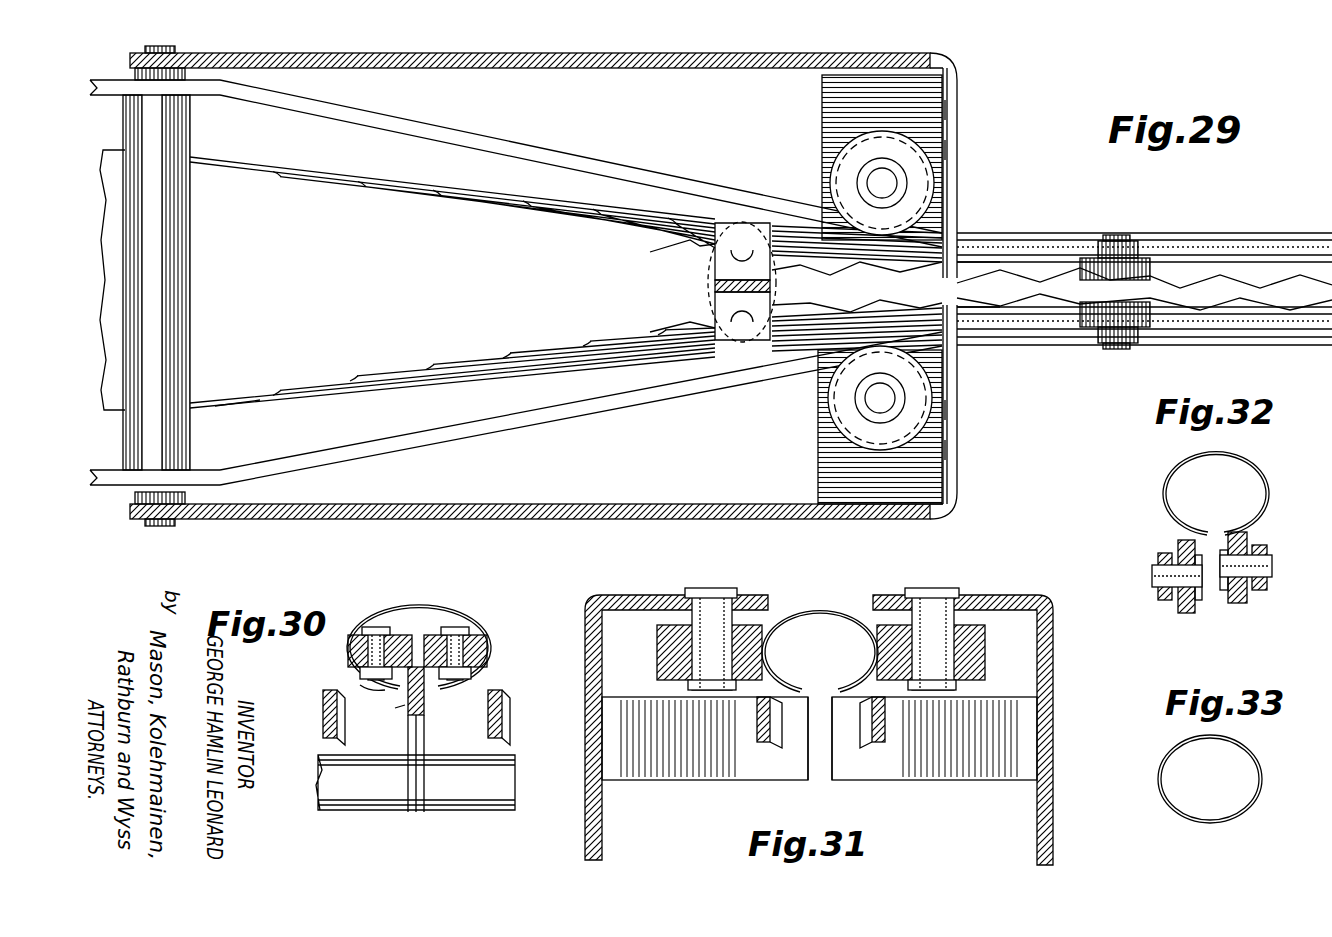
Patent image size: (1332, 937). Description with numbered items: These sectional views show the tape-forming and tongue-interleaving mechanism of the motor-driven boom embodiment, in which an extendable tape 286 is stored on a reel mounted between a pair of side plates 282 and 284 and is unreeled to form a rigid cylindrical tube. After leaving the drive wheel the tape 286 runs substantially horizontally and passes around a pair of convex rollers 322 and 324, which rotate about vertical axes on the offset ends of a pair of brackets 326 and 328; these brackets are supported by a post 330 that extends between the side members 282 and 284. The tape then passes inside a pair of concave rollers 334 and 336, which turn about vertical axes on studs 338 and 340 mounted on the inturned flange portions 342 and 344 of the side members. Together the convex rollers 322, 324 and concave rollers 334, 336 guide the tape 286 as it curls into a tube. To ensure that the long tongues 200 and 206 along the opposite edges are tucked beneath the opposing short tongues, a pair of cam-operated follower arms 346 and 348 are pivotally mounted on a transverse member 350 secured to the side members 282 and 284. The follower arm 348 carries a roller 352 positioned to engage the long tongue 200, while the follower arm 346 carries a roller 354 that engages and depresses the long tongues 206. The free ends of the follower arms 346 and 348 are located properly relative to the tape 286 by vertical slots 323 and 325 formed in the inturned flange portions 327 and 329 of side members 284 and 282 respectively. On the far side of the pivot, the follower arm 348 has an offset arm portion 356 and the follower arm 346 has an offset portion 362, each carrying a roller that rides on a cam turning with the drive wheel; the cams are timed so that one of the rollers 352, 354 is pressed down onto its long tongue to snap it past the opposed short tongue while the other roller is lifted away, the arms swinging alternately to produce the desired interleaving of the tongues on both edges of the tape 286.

In FIG. 29, the long tongue 200 is at (320, 185).
In FIG. 32, the long tongue 200 is at (1208, 528).
In FIG. 33, the long tongue 200 is at (1196, 818).
In FIG. 29, the long tongue 206 is at (238, 404).
In FIG. 30, the long tongue 206 is at (378, 688).
In FIG. 31, the long tongue 206 is at (800, 694).
In FIG. 29, the side plate 282 is at (400, 55).
In FIG. 31, the side plate 282 is at (1054, 806).
In FIG. 29, the side plate 284 is at (556, 519).
In FIG. 31, the side plate 284 is at (584, 838).
In FIG. 29, the extendable tape 286 is at (336, 408).
In FIG. 30, the extendable tape 286 is at (455, 605).
In FIG. 31, the extendable tape 286 is at (840, 605).
In FIG. 32, the extendable tape 286 is at (1262, 486).
In FIG. 33, the extendable tape 286 is at (1248, 764).
In FIG. 29, the convex roller 322 is at (714, 312).
In FIG. 30, the convex roller 322 is at (350, 640).
In FIG. 29, the vertical slot 323 is at (968, 338).
In FIG. 31, the vertical slot 323 is at (795, 750).
In FIG. 29, the convex roller 324 is at (700, 250).
In FIG. 30, the convex roller 324 is at (490, 640).
In FIG. 29, the vertical slot 325 is at (977, 232).
In FIG. 31, the vertical slot 325 is at (858, 750).
In FIG. 29, the bracket 326 is at (712, 265).
In FIG. 30, the bracket 326 is at (407, 728).
In FIG. 29, the inturned flange portion 327 is at (958, 465).
In FIG. 31, the inturned flange portion 327 is at (705, 775).
In FIG. 29, the bracket 328 is at (714, 286).
In FIG. 30, the bracket 328 is at (425, 718).
In FIG. 29, the inturned flange portion 329 is at (958, 147).
In FIG. 31, the inturned flange portion 329 is at (925, 775).
In FIG. 30, the post 330 is at (440, 800).
In FIG. 29, the concave roller 334 is at (845, 420).
In FIG. 31, the concave roller 334 is at (660, 652).
In FIG. 29, the concave roller 336 is at (842, 140).
In FIG. 31, the concave roller 336 is at (980, 655).
In FIG. 29, the stud 338 is at (876, 410).
In FIG. 31, the stud 338 is at (712, 600).
In FIG. 29, the stud 340 is at (872, 180).
In FIG. 31, the stud 340 is at (935, 600).
In FIG. 29, the inturned flange portion 342 is at (822, 485).
In FIG. 31, the inturned flange portion 342 is at (668, 595).
In FIG. 29, the inturned flange portion 344 is at (826, 96).
In FIG. 31, the inturned flange portion 344 is at (995, 595).
In FIG. 29, the follower arm 346 is at (480, 428).
In FIG. 30, the follower arm 346 is at (322, 702).
In FIG. 31, the follower arm 346 is at (756, 725).
In FIG. 32, the follower arm 346 is at (1155, 580).
In FIG. 29, the follower arm 348 is at (500, 146).
In FIG. 30, the follower arm 348 is at (505, 714).
In FIG. 31, the follower arm 348 is at (878, 745).
In FIG. 32, the follower arm 348 is at (1258, 592).
In FIG. 29, the transverse member 350 is at (190, 430).
In FIG. 29, the roller 352 is at (1150, 262).
In FIG. 32, the roller 352 is at (1238, 605).
In FIG. 29, the roller 354 is at (1152, 320).
In FIG. 32, the roller 354 is at (1185, 612).
In FIG. 29, the offset arm portion 356 is at (106, 78).
In FIG. 29, the offset portion 362 is at (106, 488).